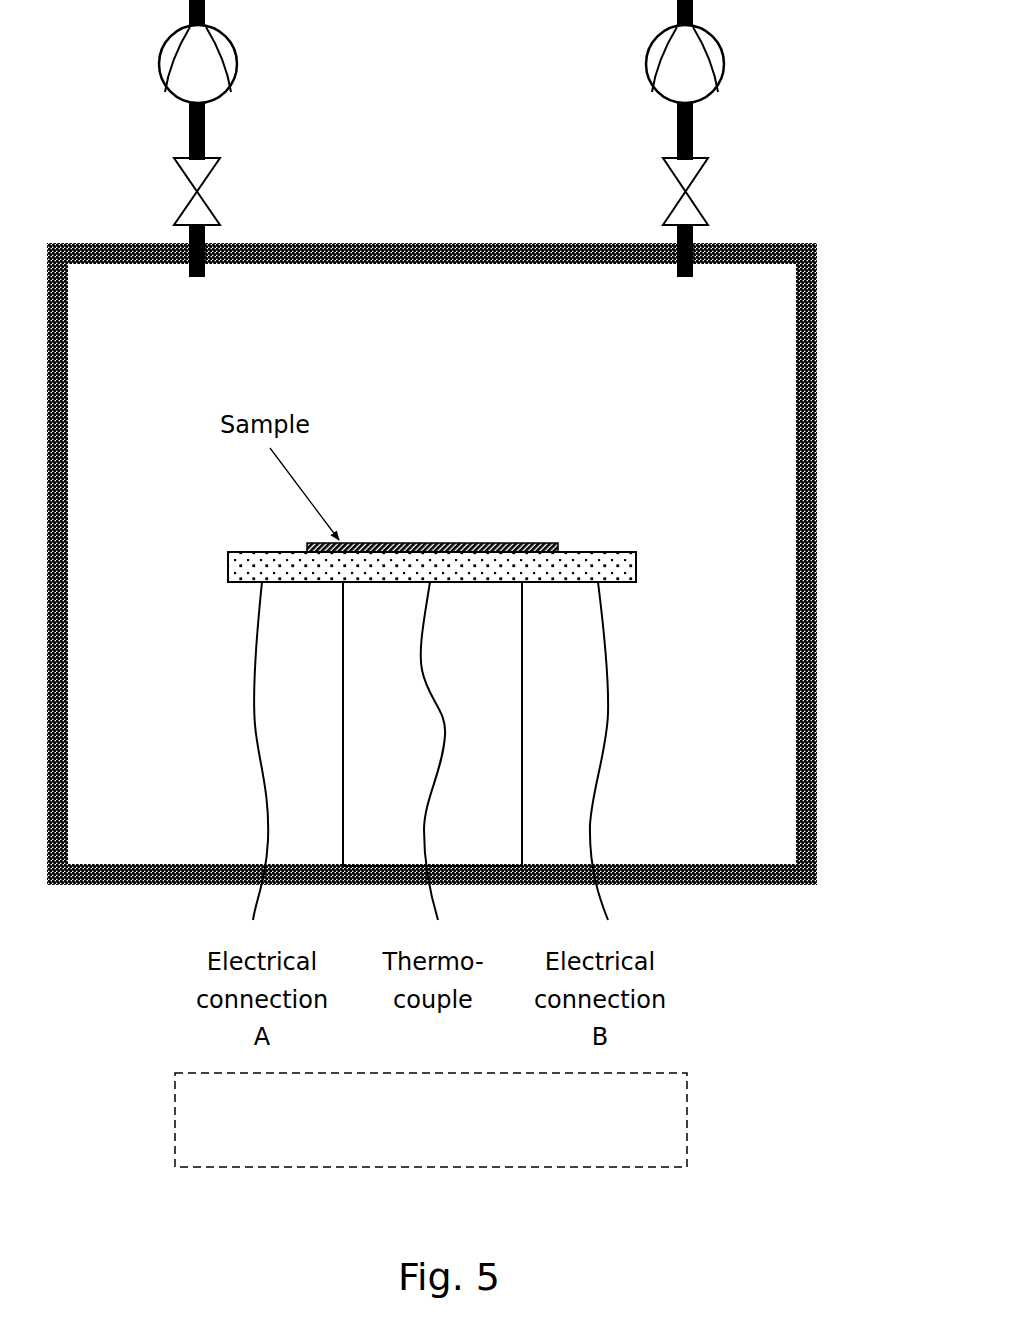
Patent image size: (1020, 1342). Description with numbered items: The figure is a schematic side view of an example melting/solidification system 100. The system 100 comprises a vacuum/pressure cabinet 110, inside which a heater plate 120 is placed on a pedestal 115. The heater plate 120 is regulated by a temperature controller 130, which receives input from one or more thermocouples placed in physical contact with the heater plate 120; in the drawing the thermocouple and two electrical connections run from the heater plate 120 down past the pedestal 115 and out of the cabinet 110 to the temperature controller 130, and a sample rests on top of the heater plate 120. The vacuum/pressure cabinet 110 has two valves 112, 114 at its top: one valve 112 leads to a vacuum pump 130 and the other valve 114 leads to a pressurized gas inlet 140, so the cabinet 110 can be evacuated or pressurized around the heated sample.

The melting/solidification system 100 is at (425, 40).
The vacuum/pressure cabinet 110 is at (433, 246).
The valve 112 is at (146, 217).
The valve 114 is at (735, 217).
The pedestal 115 is at (341, 725).
The heater plate 120 is at (601, 548).
The temperature controller / vacuum pump 130 is at (364, 583).
The pressurized gas inlet 140 is at (763, 80).